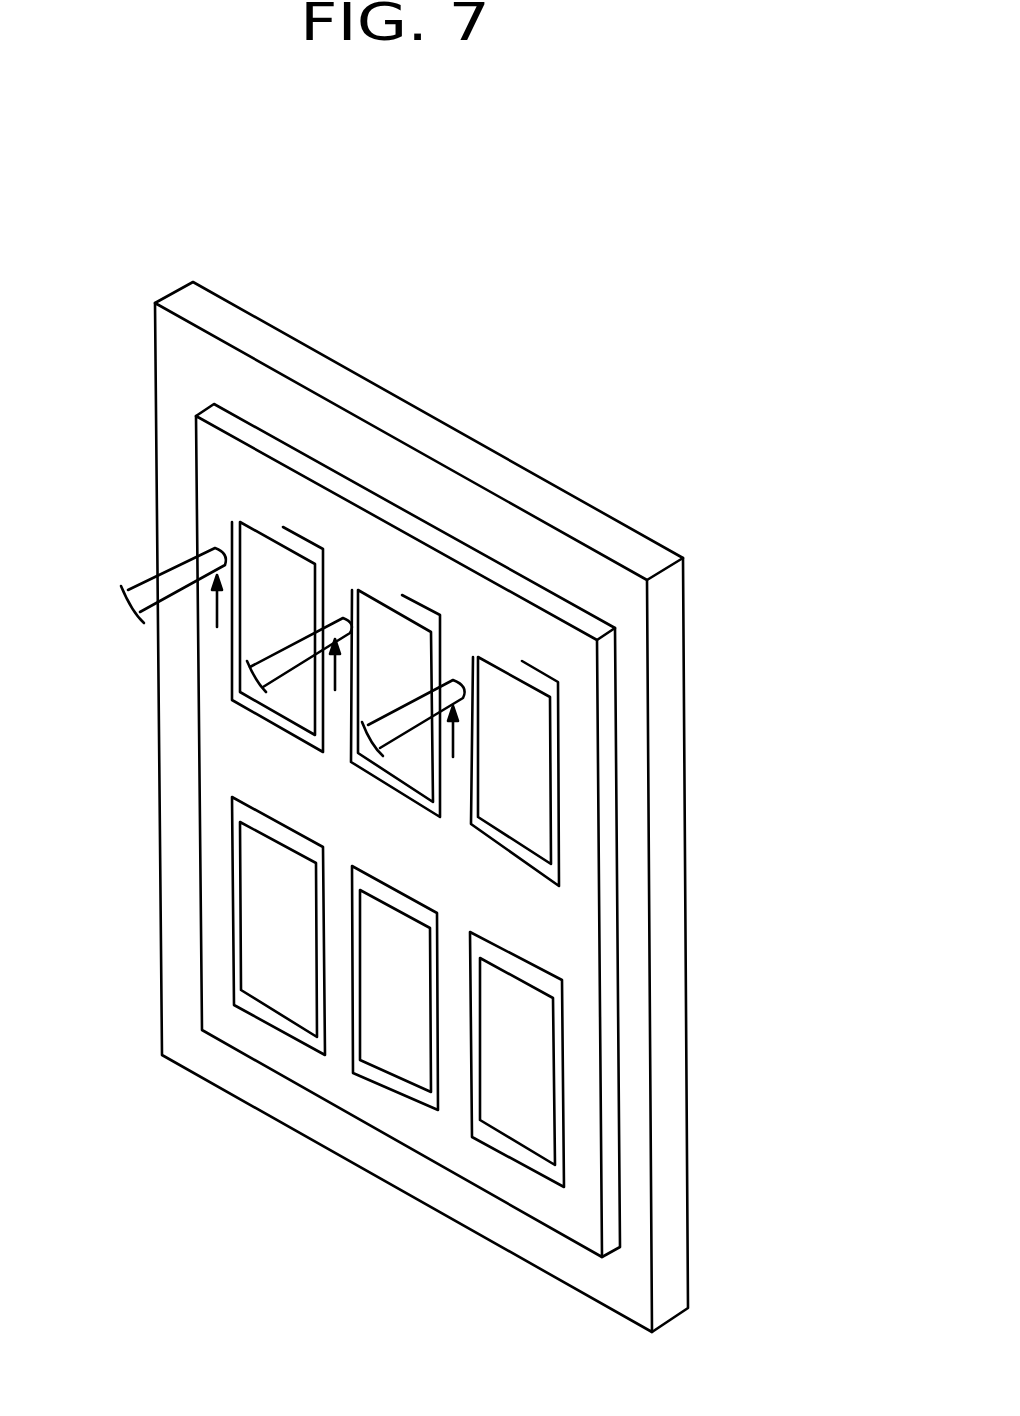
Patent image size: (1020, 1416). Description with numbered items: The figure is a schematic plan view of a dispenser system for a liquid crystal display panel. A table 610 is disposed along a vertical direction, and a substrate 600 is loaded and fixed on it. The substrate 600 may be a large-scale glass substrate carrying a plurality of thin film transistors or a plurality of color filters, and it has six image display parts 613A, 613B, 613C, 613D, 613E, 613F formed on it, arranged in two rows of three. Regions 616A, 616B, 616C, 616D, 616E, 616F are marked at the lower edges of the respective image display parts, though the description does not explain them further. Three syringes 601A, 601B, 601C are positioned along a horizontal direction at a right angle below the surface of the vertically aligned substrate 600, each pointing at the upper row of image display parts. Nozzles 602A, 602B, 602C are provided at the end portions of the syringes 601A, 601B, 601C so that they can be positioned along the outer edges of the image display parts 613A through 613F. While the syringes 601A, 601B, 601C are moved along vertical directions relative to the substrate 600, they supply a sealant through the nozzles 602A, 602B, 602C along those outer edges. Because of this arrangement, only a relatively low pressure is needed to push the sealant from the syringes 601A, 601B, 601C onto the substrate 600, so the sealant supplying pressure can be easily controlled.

The substrate 600 is at (575, 1245).
The table 610 is at (690, 1243).
The image display part 613A is at (547, 1058).
The image display part 613B is at (427, 988).
The image display part 613C is at (305, 930).
The image display part 613D is at (545, 773).
The image display part 613E is at (425, 670).
The image display part 613F is at (305, 603).
The opening 616A is at (515, 1160).
The opening 616B is at (393, 1097).
The opening 616C is at (277, 1030).
The opening 616D is at (560, 857).
The opening 616E is at (425, 810).
The opening 616F is at (250, 717).
The syringe 601A is at (226, 549).
The syringe 601B is at (347, 616).
The syringe 601C is at (466, 684).
The nozzle 602A is at (241, 546).
The nozzle 602B is at (358, 591).
The nozzle 602C is at (479, 658).